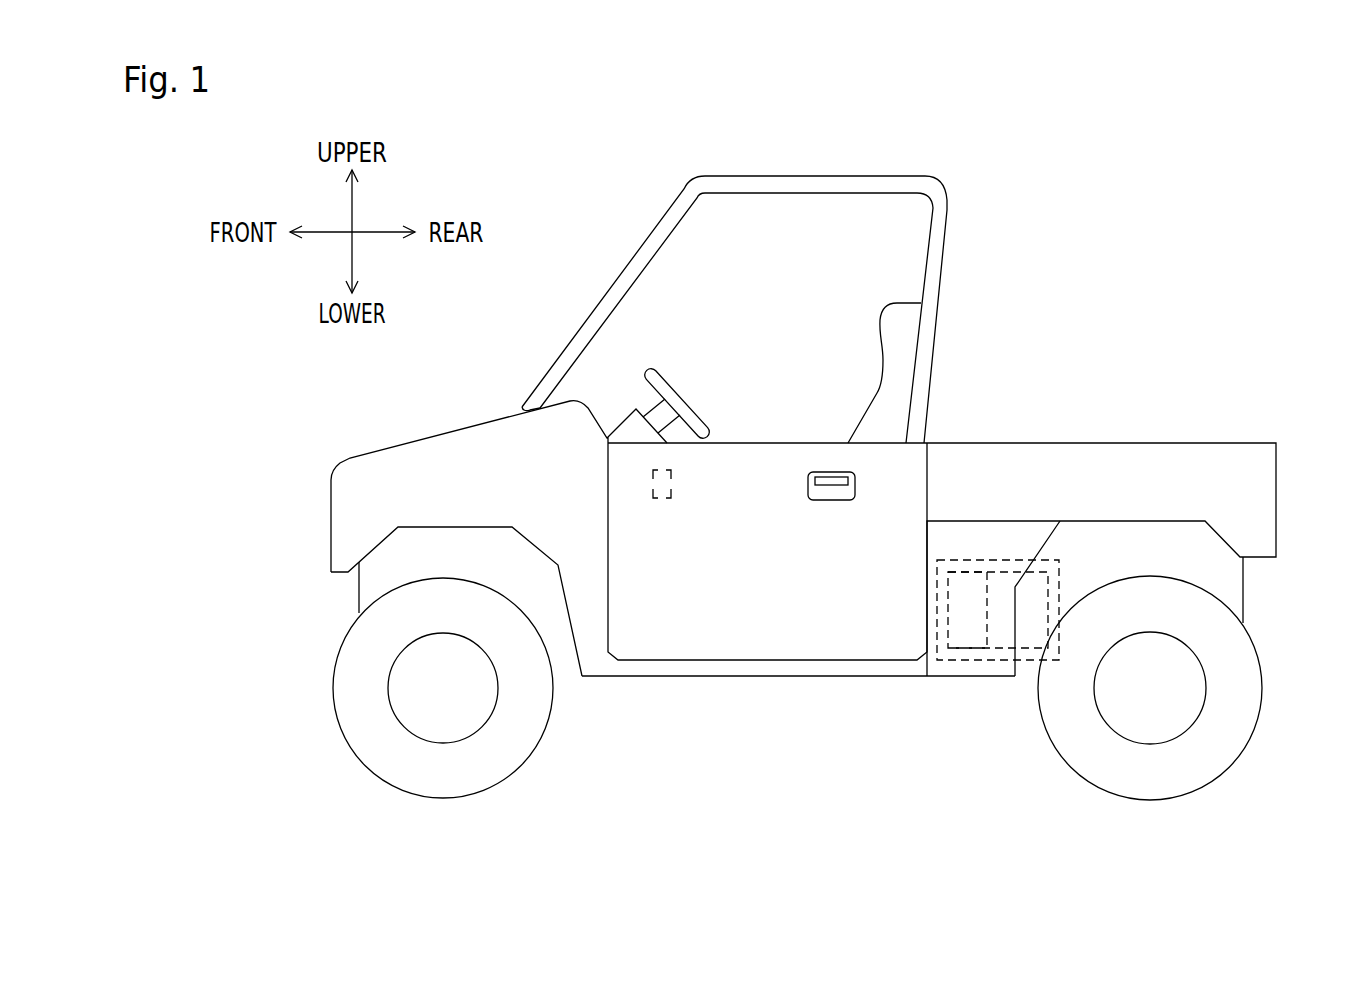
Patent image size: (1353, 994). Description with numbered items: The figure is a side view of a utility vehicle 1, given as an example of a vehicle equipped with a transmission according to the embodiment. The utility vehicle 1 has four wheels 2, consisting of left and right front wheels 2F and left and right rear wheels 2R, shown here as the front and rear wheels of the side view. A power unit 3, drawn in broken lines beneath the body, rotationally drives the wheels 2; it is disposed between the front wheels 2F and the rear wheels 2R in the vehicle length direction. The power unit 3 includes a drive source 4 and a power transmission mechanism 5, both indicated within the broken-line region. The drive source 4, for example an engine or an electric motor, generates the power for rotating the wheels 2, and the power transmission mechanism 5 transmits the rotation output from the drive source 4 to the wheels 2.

The utility vehicle 1 is at (1133, 203).
The wheels 2 is at (797, 730).
The front wheels 2F is at (443, 780).
The rear wheels 2R is at (1147, 780).
The power unit 3 is at (935, 660).
The drive source 4 is at (967, 638).
The power transmission mechanism 5 is at (1000, 638).